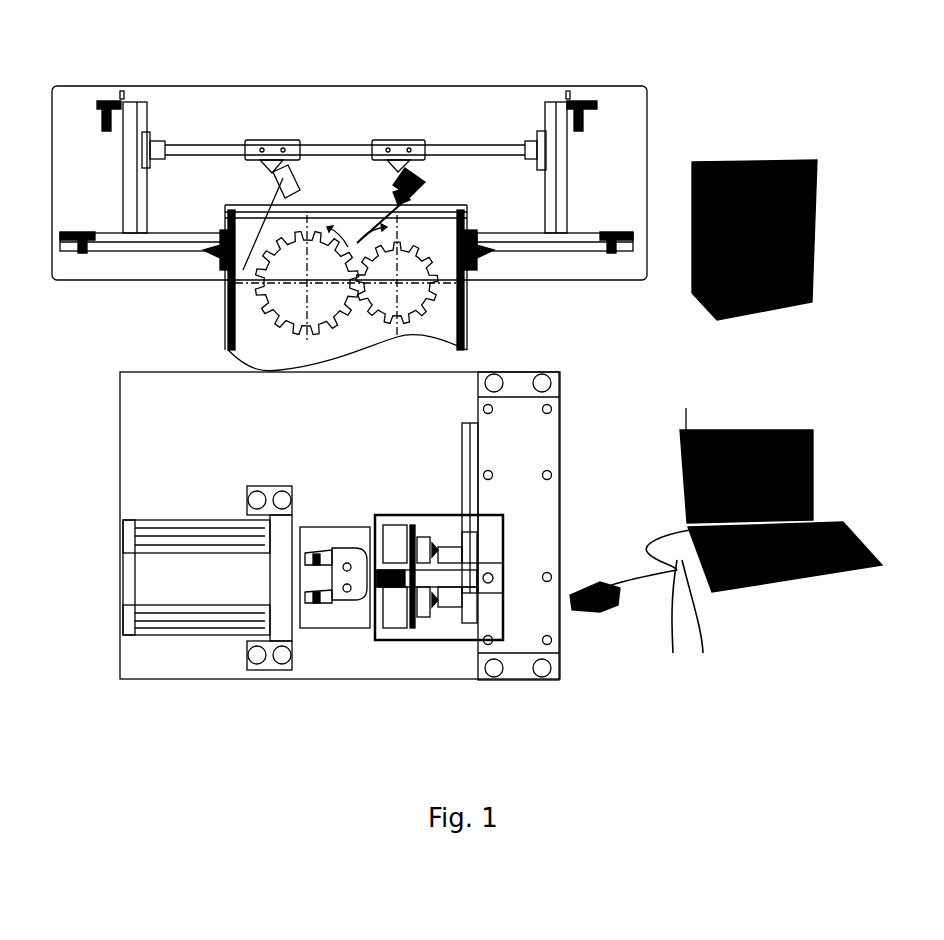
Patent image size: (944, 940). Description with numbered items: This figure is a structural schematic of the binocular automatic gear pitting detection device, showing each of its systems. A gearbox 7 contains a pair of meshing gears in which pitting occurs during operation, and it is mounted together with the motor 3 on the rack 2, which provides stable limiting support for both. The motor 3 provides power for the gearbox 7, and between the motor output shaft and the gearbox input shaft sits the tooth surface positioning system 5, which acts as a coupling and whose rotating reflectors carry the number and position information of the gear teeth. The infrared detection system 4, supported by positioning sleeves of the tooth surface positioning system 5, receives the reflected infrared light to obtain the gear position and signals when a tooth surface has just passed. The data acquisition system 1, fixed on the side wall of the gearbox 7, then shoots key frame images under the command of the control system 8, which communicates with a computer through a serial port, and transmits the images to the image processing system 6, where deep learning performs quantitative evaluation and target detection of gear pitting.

The data acquisition system 1 is at (349, 157).
The rack 2 is at (299, 506).
The motor 3 is at (165, 573).
The infrared detection system 4 is at (359, 646).
The tooth surface positioning system 5 is at (458, 640).
The image processing system 6 is at (726, 512).
The gearbox 7 is at (538, 437).
The control system 8 is at (756, 202).